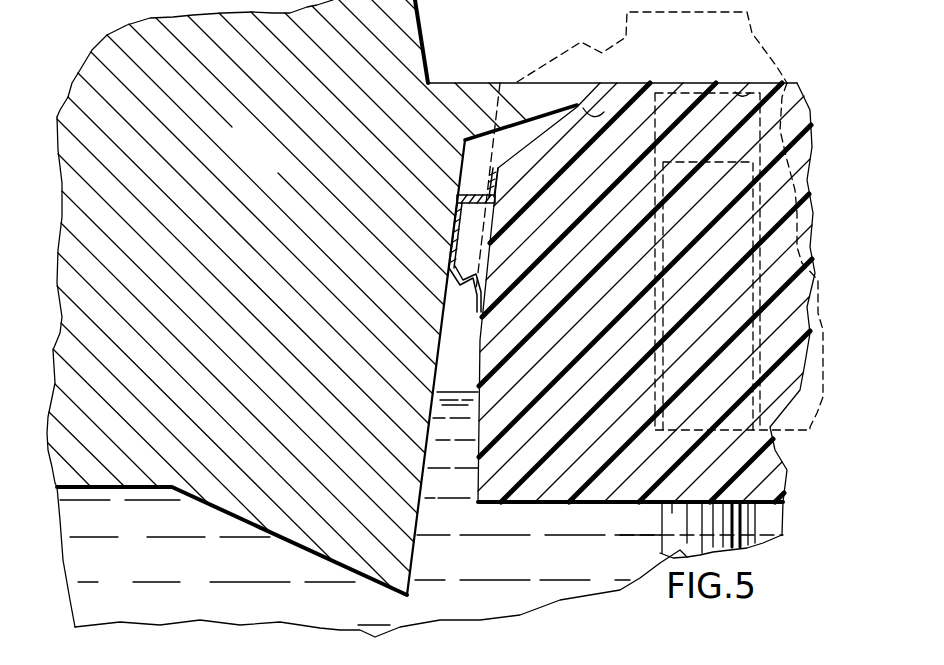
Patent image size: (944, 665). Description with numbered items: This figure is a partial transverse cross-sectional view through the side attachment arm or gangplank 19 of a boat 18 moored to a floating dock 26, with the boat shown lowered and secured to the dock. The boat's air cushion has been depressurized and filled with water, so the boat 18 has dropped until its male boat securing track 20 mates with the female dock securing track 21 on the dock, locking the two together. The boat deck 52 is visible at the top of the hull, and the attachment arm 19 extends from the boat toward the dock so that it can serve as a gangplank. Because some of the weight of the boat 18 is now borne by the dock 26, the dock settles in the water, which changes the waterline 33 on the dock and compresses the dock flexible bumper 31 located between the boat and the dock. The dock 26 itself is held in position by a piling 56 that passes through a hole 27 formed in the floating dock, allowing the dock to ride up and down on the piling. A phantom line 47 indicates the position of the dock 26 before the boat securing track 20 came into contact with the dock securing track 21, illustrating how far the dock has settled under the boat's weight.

The boat 18 is at (275, 161).
The boat deck 52 is at (433, 83).
The side attachment arm or gangplank 19 is at (500, 83).
The boat securing track 20 is at (594, 117).
The dock securing track 21 is at (616, 92).
The phantom line 47 is at (690, 12).
The floating dock 26 is at (787, 83).
The hole 27 is at (745, 95).
The dock flexible bumper 31 is at (444, 235).
The water surface or waterline 33 is at (455, 388).
The piling 56 is at (662, 548).